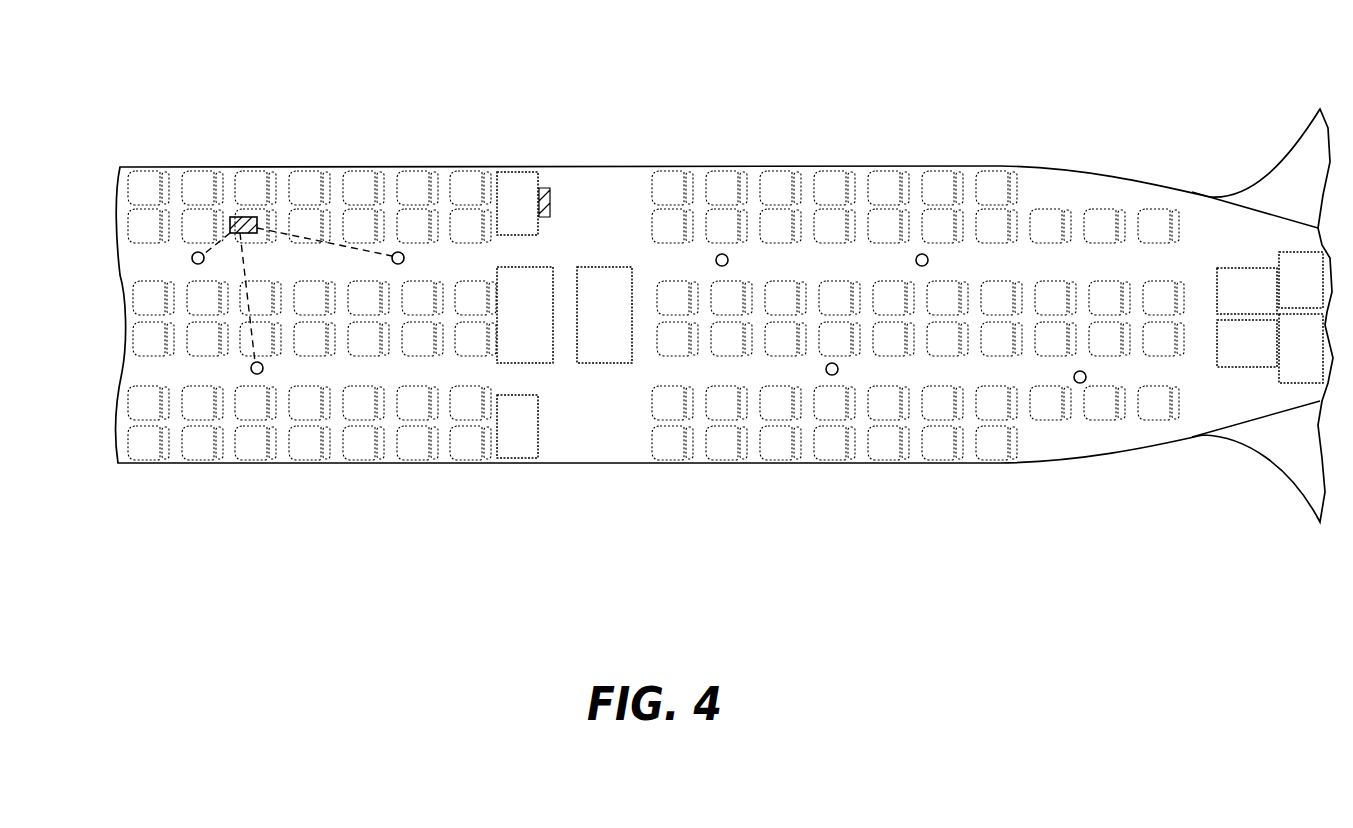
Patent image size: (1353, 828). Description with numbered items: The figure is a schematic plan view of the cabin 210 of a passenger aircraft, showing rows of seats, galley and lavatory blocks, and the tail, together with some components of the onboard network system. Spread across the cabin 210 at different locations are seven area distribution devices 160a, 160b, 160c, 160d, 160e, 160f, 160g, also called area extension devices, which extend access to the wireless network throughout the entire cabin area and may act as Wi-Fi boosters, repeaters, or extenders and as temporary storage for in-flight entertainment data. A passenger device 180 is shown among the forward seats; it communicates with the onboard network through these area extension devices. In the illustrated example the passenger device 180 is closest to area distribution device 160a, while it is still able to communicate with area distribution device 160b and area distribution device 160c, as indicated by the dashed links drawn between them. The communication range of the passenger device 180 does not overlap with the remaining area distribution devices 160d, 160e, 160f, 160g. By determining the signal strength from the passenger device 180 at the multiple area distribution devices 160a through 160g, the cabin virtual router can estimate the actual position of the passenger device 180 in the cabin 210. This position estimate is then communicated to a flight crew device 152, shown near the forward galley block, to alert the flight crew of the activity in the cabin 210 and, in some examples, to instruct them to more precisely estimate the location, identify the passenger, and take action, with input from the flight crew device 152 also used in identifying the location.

The cabin 210 is at (122, 117).
The flight crew device 152 is at (550, 187).
The passenger device 180 is at (244, 216).
The area distribution device 160a is at (197, 252).
The area distribution device 160b is at (398, 252).
The area distribution device 160c is at (257, 374).
The area distribution device 160d is at (722, 254).
The area distribution device 160e is at (922, 254).
The area distribution device 160f is at (832, 375).
The area distribution device 160g is at (1080, 383).